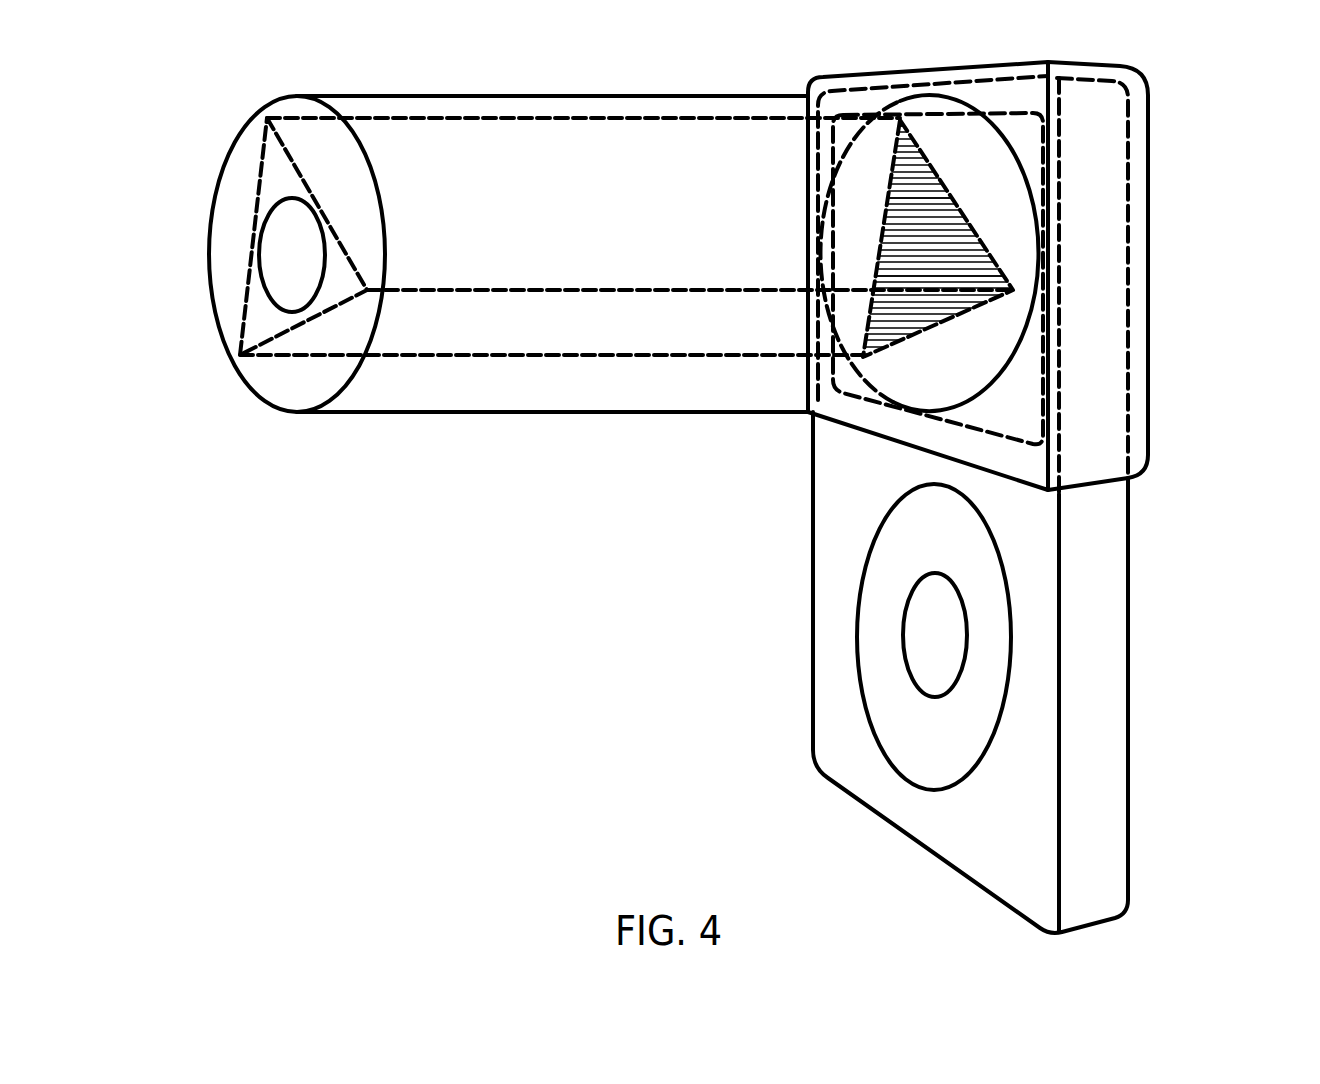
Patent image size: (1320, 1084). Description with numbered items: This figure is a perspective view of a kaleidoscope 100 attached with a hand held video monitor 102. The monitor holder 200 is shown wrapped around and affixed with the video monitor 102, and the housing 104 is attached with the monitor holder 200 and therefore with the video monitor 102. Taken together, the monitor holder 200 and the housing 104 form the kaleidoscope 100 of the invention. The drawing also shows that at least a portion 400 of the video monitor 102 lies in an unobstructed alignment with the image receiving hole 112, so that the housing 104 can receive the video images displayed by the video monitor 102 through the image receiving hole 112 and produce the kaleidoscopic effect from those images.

The kaleidoscope 100 is at (209, 113).
The video monitor 102 is at (986, 409).
The housing 104 is at (487, 412).
The image receiving hole 112 is at (923, 327).
The monitor holder 200 is at (1153, 437).
The portion of the video monitor 400 is at (940, 188).